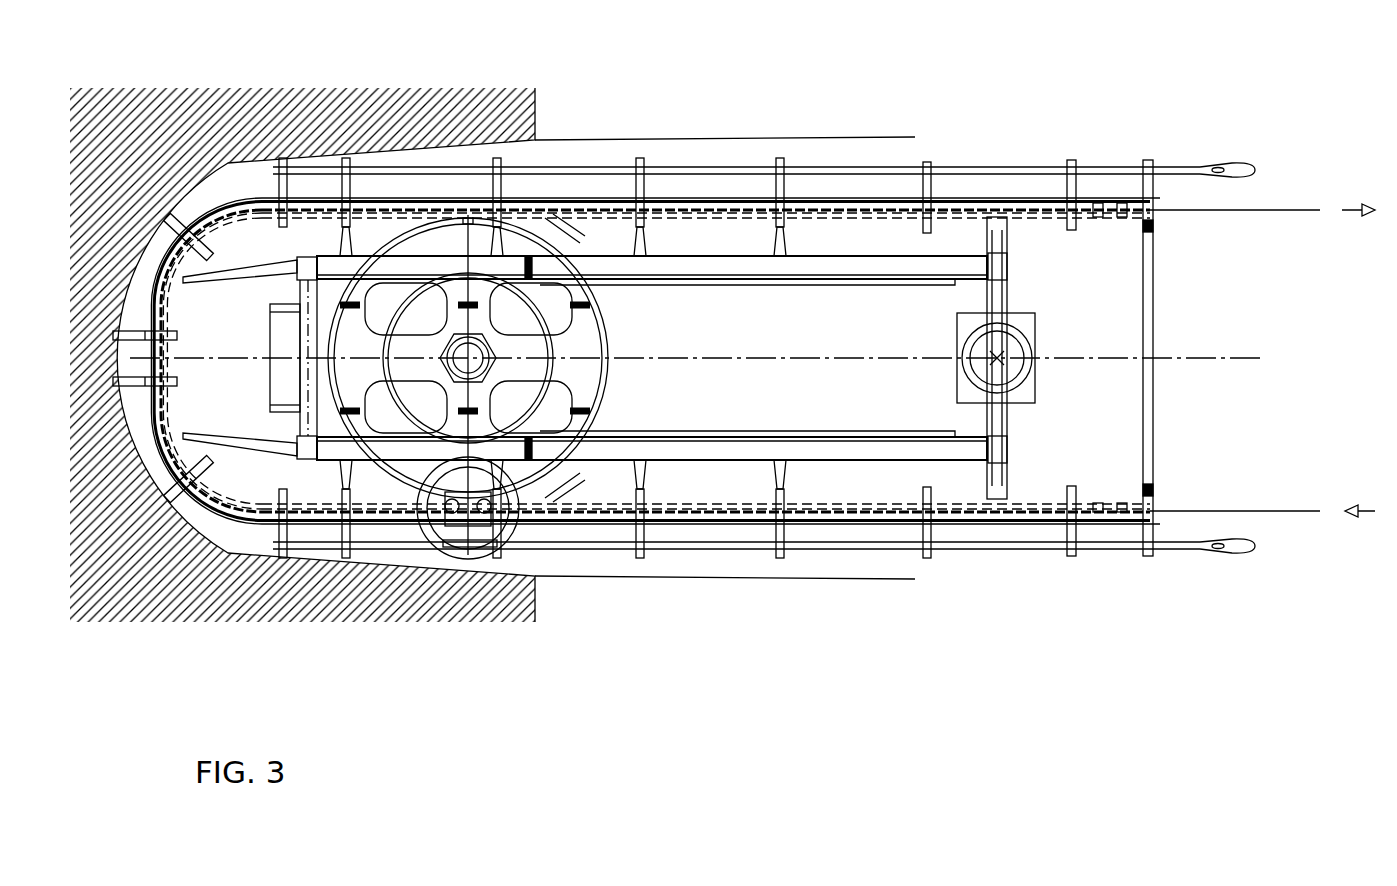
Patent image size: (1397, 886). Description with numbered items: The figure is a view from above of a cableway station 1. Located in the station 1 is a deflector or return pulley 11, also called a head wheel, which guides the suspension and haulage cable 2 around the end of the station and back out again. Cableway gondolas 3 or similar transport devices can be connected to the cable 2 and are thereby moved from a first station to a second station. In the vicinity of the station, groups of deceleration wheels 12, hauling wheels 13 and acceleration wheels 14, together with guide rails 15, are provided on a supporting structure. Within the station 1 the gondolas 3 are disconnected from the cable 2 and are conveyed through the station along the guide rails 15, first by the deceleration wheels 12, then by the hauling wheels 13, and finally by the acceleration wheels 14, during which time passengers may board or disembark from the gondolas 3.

The station 1 is at (790, 405).
The suspension and haulage cable 2 is at (1252, 213).
The cableway gondolas 3 is at (470, 559).
The return pulley 11 is at (607, 326).
The deceleration wheels 12 is at (819, 522).
The hauling wheels 13 is at (222, 177).
The acceleration wheels 14 is at (820, 197).
The guide rails 15 is at (312, 215).